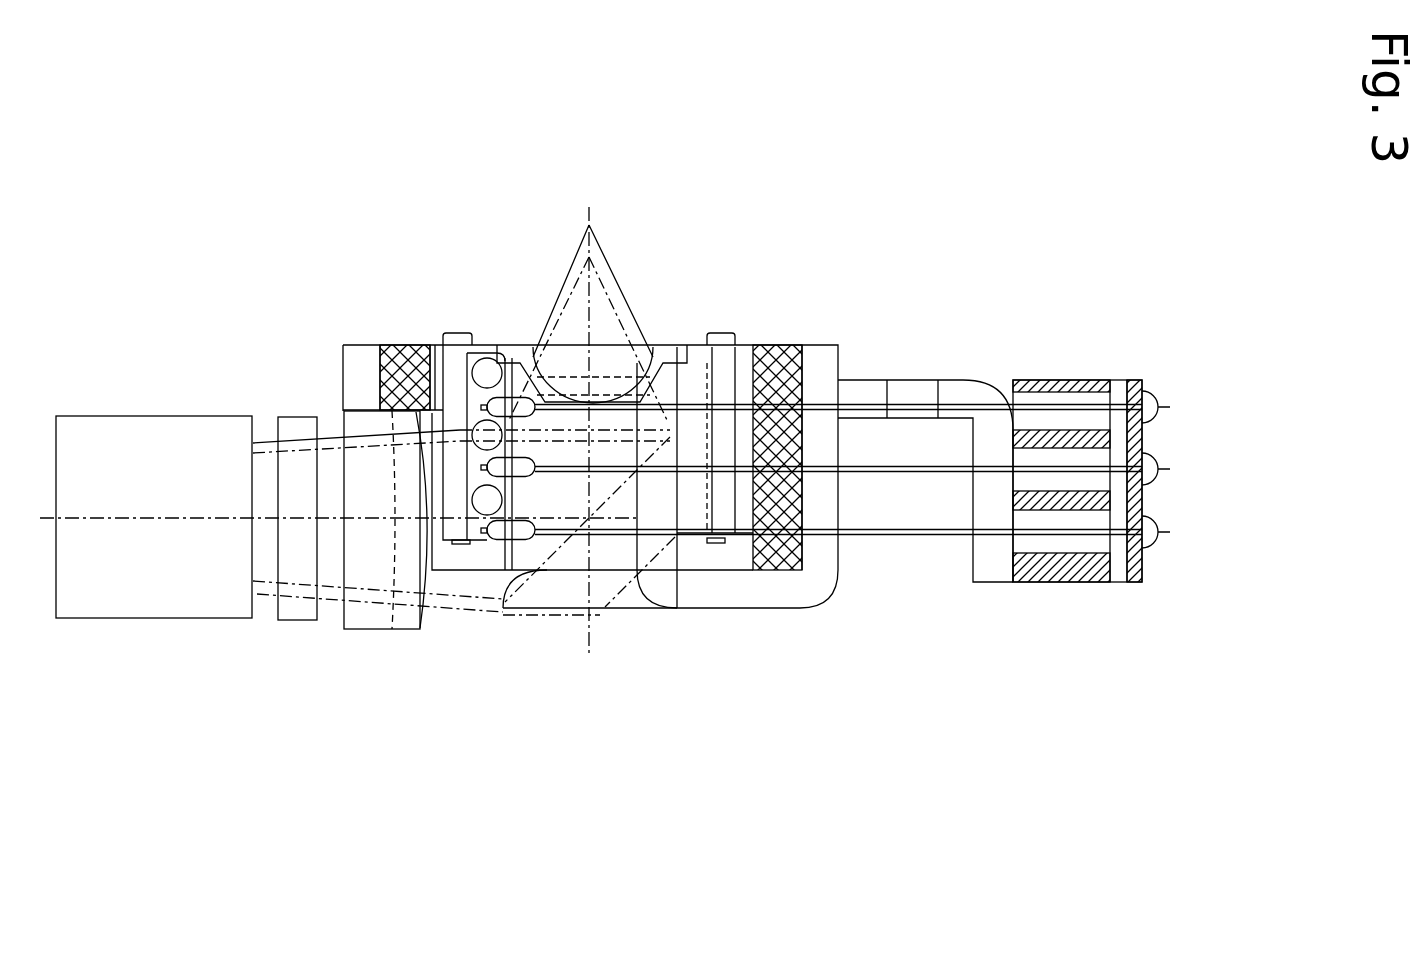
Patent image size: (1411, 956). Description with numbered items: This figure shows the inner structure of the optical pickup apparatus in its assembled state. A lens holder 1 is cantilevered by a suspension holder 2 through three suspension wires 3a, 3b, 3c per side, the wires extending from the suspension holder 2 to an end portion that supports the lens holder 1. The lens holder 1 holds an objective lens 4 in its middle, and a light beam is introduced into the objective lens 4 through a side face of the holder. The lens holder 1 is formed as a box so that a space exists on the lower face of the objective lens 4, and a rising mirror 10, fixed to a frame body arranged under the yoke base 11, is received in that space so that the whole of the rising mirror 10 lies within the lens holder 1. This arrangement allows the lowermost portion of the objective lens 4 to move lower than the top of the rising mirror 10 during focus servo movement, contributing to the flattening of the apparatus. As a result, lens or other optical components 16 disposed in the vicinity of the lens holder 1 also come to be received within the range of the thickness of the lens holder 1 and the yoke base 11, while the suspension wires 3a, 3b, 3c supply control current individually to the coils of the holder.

The lens holder 1 is at (453, 388).
The suspension holder 2 is at (1073, 378).
The suspension wire 3a is at (866, 405).
The suspension wire 3b is at (927, 477).
The suspension wire 3c is at (866, 530).
The objective lens 4 is at (623, 357).
The rising mirror 10 is at (593, 580).
The yoke base 11 is at (743, 595).
The optical components 16 is at (50, 668).